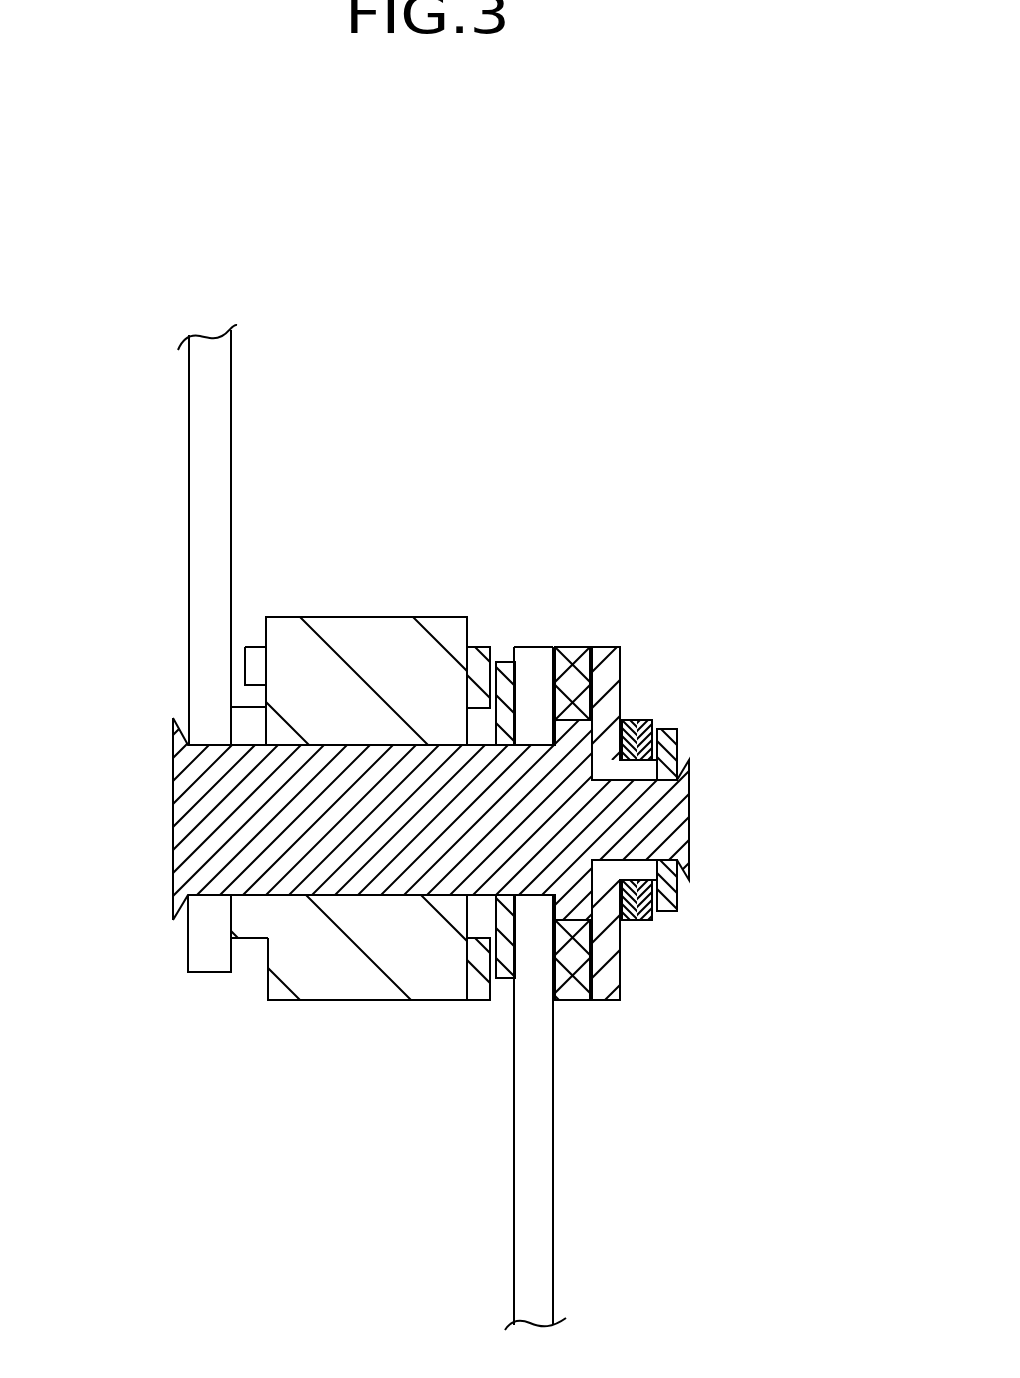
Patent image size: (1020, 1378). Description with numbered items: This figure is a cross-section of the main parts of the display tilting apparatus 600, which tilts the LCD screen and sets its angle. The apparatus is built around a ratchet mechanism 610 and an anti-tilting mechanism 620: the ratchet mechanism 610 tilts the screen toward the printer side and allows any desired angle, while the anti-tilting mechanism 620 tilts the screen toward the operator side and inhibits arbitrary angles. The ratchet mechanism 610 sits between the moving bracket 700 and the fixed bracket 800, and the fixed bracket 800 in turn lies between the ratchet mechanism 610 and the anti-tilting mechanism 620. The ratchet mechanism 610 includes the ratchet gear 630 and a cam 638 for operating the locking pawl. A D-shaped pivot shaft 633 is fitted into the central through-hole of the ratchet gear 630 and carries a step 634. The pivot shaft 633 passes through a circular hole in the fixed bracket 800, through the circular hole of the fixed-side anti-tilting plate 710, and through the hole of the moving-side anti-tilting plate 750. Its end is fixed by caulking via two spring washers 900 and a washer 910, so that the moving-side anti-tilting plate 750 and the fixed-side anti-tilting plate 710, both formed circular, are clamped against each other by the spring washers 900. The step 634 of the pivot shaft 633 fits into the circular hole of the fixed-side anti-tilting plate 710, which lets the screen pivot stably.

The display tilting apparatus 600 is at (489, 577).
The ratchet mechanism 610 is at (362, 1003).
The anti-tilting mechanism 620 is at (640, 810).
The ratchet gear 630 is at (364, 628).
The pivot shaft 633 is at (300, 850).
The step 634 is at (598, 924).
The cam 638 is at (475, 1000).
The moving bracket 700 is at (203, 403).
The fixed-side anti-tilting plate 710 is at (570, 647).
The moving-side anti-tilting plate 750 is at (616, 647).
The fixed bracket 800 is at (541, 1167).
The spring washers 900 is at (628, 722).
The washer 910 is at (678, 737).